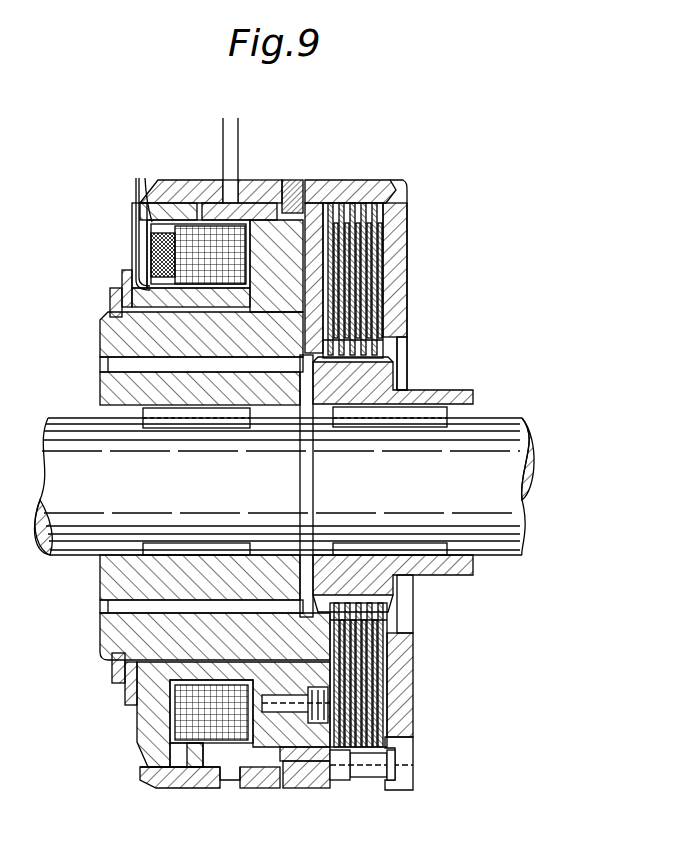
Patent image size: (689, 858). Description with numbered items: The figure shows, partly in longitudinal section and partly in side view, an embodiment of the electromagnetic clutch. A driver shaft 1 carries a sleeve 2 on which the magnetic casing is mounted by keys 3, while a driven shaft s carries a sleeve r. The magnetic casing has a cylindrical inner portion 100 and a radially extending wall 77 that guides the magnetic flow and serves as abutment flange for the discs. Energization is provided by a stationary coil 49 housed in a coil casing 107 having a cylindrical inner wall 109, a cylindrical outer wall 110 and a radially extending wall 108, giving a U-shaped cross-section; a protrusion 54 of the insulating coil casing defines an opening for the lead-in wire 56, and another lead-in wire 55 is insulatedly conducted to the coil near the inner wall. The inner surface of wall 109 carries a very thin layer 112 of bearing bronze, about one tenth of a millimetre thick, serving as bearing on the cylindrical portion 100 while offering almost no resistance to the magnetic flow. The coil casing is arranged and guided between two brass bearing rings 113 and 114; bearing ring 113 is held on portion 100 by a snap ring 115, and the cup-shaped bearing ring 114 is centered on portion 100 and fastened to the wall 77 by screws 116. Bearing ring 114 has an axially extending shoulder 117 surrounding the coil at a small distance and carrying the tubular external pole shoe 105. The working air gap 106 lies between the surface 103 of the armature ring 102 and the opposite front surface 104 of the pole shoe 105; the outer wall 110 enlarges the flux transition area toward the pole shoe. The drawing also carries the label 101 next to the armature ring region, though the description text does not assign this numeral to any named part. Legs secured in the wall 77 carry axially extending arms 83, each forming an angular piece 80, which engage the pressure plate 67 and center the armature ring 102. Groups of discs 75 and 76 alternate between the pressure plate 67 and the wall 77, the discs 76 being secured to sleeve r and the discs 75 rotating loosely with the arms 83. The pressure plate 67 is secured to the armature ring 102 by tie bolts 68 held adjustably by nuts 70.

The driver shaft 1 is at (84, 538).
The driven shaft s is at (518, 492).
The sleeve 2 is at (108, 385).
The keys 3 is at (107, 604).
The sleeve r is at (455, 392).
The cylindrical inner portion 100 is at (112, 334).
The cylindrical inner wall 109 is at (188, 298).
The bearing ring 113 is at (124, 282).
The snap ring 115 is at (114, 302).
The lead in wire 55 is at (133, 176).
The lead in wire 56 is at (145, 178).
The cylindrical outer wall 110 is at (183, 207).
The working air gap 106 is at (245, 130).
The axially extending shoulder 117 is at (232, 212).
The bearing ring 114 is at (268, 210).
The radially extending wall 77 is at (312, 232).
The axially extending arm 83 is at (343, 194).
The angular piece 80 is at (397, 173).
The discs 76 is at (382, 252).
The discs 75 is at (380, 290).
The protrusion 54 is at (152, 250).
The layer of bearing metal 112 is at (138, 713).
The radially extending wall 108 is at (150, 726).
The magnetic coil 49 is at (192, 736).
The magnetic casing 107 is at (142, 756).
The tubular external pole shoe 105 is at (204, 776).
The front surface 104 is at (231, 782).
The surface 103 is at (252, 776).
The armature ring 102 is at (312, 740).
The plate 101 is at (325, 772).
The screws 116 is at (262, 700).
The tie bolts 68 is at (365, 778).
The nuts 70 is at (398, 782).
The pressure plate 67 is at (405, 718).